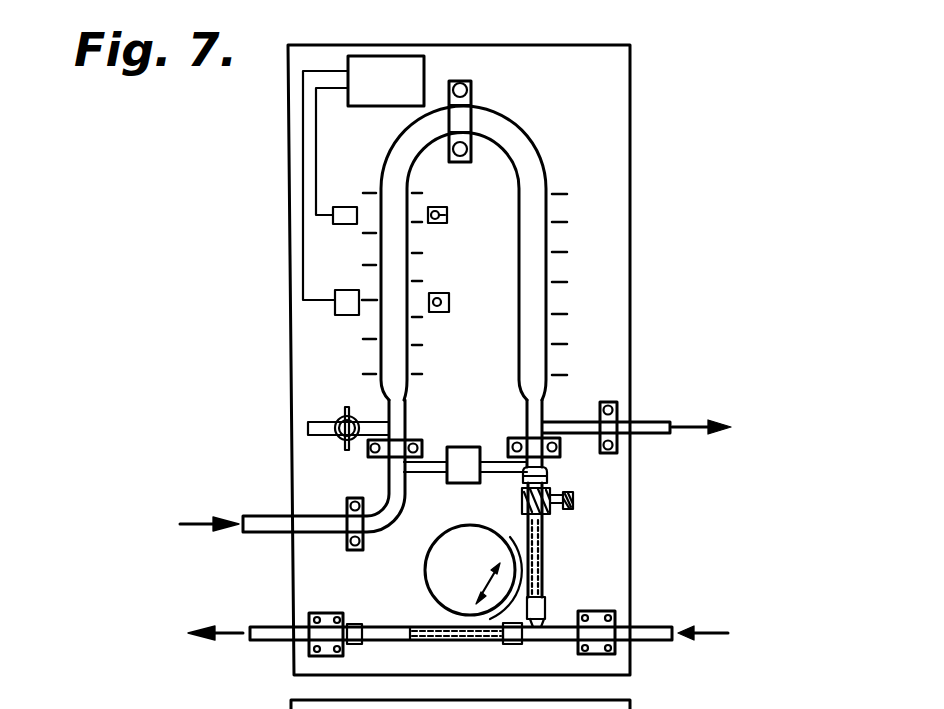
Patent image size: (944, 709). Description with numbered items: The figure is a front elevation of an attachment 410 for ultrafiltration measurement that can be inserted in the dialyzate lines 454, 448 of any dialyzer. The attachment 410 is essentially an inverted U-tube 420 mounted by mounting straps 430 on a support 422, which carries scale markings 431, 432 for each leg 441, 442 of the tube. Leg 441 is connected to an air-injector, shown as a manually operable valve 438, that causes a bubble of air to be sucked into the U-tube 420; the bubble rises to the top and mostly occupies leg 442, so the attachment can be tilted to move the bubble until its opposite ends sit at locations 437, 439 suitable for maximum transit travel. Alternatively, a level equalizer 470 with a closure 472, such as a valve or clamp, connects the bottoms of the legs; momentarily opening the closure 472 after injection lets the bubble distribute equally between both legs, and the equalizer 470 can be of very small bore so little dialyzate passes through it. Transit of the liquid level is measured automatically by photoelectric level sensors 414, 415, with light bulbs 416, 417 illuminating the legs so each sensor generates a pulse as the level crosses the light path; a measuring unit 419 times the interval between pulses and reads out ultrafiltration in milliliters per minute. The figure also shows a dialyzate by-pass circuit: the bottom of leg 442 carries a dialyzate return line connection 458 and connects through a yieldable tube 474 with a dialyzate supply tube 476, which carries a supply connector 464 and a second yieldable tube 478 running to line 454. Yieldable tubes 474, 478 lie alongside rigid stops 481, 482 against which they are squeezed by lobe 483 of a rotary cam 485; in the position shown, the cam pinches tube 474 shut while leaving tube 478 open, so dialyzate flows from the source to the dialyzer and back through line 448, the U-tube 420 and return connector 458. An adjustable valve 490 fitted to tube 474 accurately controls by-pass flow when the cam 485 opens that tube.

The attachment 410 is at (278, 394).
The photoelectric level sensor 414 is at (350, 315).
The photoelectric level sensor 415 is at (342, 214).
The light bulb 416 is at (450, 305).
The light bulb 417 is at (448, 212).
The measuring unit 419 is at (382, 72).
The inverted U-tube 420 is at (520, 150).
The support 422 is at (676, 113).
The mounting strap 430 is at (466, 82).
The scale markings 431 is at (413, 346).
The scale markings 432 is at (558, 345).
The bubble end location 437 is at (405, 398).
The valve 438 is at (336, 440).
The bubble end location 439 is at (519, 185).
The leg 441 is at (386, 393).
The leg 442 is at (556, 378).
The dialyzate line 448 is at (275, 533).
The dialyzate line 454 is at (270, 642).
The dialyzate return line connection 458 is at (648, 428).
The supply connector 464 is at (652, 644).
The level equalizer 470 is at (433, 468).
The closure 472 is at (462, 476).
The yieldable tube 474 is at (543, 537).
The dialyzate supply tube 476 is at (557, 636).
The yieldable tube 478 is at (510, 643).
The rigid stop 481 is at (543, 577).
The rigid stop 482 is at (502, 641).
The lobe 483 is at (528, 515).
The rotary cam 485 is at (452, 578).
The adjustable valve 490 is at (560, 494).